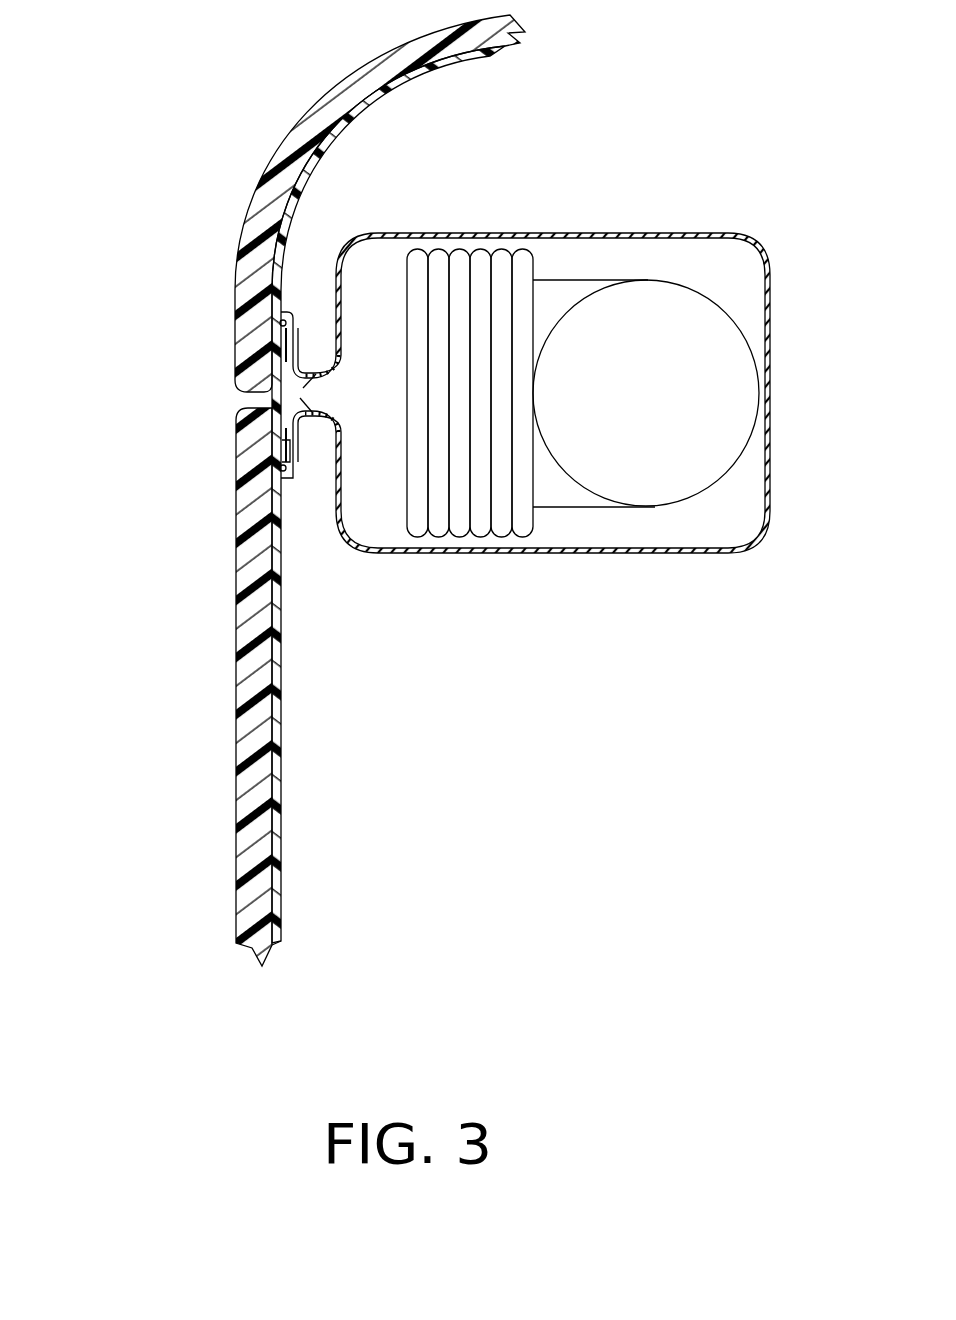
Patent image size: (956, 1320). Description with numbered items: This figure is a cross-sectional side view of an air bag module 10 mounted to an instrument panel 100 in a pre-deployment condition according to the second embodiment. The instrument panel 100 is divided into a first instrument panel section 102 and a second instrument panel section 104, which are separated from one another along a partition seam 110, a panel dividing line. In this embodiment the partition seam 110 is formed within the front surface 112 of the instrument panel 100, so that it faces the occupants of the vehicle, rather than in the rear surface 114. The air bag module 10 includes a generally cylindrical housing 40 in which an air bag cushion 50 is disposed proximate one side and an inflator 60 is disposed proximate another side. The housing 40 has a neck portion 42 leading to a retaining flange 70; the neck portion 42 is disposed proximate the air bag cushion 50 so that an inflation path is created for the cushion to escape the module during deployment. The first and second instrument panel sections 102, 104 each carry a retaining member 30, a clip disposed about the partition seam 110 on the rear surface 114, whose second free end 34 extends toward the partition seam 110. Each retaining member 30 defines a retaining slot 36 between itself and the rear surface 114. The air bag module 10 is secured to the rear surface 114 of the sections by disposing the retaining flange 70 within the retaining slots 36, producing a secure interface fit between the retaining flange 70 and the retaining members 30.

The air bag module 10 is at (559, 362).
The retaining member 30 is at (293, 305).
The second free end 34 is at (292, 362).
The retaining slot 36 is at (280, 322).
The housing 40 is at (720, 232).
The neck portion 42 is at (307, 418).
The air bag cushion 50 is at (502, 537).
The inflator 60 is at (697, 497).
The retaining flange 70 is at (283, 454).
The instrument panel 100 is at (304, 479).
The first instrument panel section 102 is at (322, 203).
The second instrument panel section 104 is at (238, 711).
The partition seam 110 is at (281, 393).
The front surface 112 is at (237, 253).
The rear surface 114 is at (356, 112).